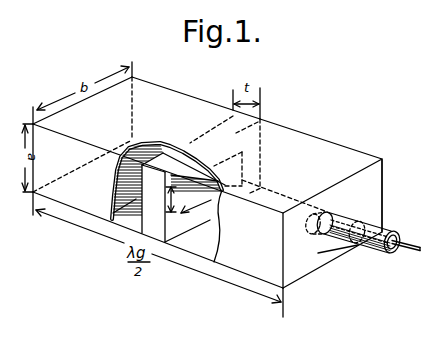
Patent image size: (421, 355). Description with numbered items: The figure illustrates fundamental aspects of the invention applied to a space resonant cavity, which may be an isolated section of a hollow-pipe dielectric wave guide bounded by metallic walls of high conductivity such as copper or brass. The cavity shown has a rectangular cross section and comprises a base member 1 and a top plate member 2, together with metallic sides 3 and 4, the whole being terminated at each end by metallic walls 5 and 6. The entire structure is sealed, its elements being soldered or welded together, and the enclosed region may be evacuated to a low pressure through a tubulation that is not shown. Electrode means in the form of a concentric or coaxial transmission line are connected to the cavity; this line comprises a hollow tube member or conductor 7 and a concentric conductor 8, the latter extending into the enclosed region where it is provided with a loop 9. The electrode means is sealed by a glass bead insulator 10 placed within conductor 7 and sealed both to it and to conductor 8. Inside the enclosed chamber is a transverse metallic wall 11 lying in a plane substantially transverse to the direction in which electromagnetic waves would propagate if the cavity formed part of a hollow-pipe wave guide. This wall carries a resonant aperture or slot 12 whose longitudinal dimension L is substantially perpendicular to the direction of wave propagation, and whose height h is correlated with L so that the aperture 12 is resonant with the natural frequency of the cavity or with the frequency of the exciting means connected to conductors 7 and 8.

The base member 1 is at (117, 204).
The top plate member 2 is at (308, 142).
The metallic side 3 is at (210, 239).
The metallic side 4 is at (384, 186).
The metallic wall 5 is at (134, 76).
The metallic wall 6 is at (318, 255).
The hollow tube member or conductor 7 is at (397, 232).
The concentric conductor 8 is at (397, 250).
The loop 9 is at (305, 228).
The glass bead insulator 10 is at (357, 246).
The transverse metallic wall 11 is at (158, 158).
The resonant aperture or slot 12 is at (207, 178).